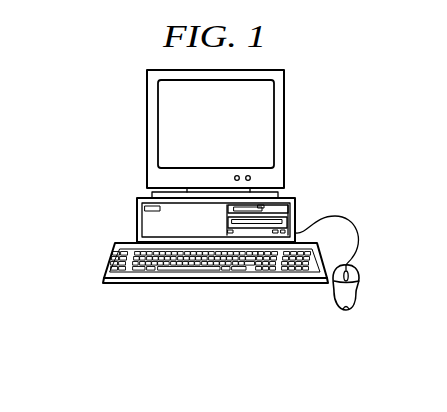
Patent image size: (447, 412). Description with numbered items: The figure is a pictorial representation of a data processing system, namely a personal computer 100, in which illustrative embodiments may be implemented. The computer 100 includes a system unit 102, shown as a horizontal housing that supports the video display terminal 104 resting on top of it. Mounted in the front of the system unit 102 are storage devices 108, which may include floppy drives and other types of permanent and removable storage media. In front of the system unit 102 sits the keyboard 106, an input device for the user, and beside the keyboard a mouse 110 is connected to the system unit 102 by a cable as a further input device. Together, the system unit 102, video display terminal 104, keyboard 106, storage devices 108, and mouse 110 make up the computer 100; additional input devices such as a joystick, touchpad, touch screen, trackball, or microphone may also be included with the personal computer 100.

The computer 100 is at (85, 114).
The system unit 102 is at (135, 215).
The video display terminal 104 is at (287, 125).
The keyboard 106 is at (130, 284).
The storage devices 108 is at (264, 209).
The mouse 110 is at (344, 312).